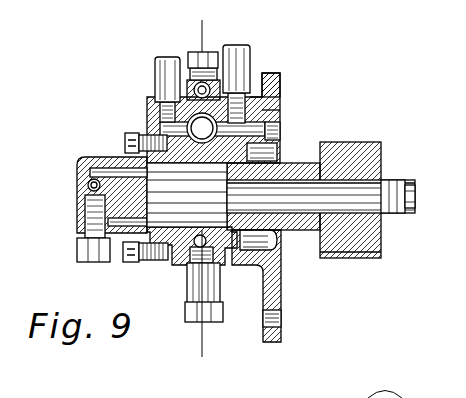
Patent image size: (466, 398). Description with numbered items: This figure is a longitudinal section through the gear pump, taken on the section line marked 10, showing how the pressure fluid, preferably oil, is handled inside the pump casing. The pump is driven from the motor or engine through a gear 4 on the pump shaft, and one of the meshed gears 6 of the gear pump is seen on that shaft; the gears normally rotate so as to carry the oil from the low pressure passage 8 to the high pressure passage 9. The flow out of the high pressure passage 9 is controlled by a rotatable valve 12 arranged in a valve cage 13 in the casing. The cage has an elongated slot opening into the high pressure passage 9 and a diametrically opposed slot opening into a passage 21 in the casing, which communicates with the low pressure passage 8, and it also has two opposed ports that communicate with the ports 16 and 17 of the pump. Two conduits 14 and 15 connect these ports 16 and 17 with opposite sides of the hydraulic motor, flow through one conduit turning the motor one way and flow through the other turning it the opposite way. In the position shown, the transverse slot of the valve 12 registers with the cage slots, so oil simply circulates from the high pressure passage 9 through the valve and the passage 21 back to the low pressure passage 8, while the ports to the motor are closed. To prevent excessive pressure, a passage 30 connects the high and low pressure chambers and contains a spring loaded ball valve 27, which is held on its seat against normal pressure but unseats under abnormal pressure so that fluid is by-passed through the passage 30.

The gear 4 is at (350, 143).
The meshed gear 6 is at (246, 181).
The low pressure passage 8 is at (182, 252).
The high pressure passage 9 is at (278, 131).
The section line 10 is at (190, 35).
The valve 12 is at (234, 110).
The valve cage 13 is at (234, 90).
The conduit 14 is at (157, 61).
The conduit 15 is at (238, 45).
The port 16 is at (167, 102).
The port 17 is at (276, 111).
The passage 21 is at (188, 66).
The spring loaded ball valve 27 is at (88, 184).
The passage 30 is at (113, 170).